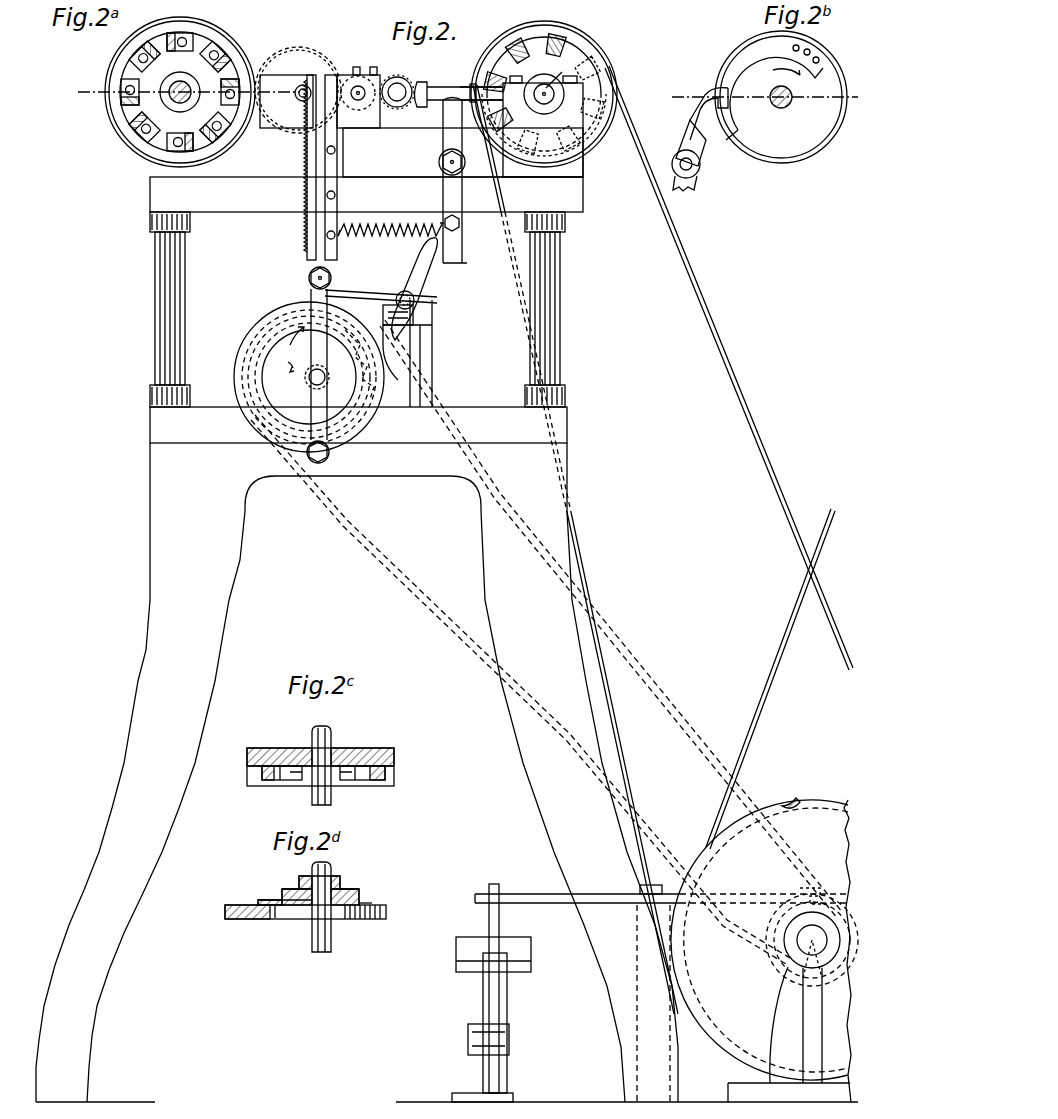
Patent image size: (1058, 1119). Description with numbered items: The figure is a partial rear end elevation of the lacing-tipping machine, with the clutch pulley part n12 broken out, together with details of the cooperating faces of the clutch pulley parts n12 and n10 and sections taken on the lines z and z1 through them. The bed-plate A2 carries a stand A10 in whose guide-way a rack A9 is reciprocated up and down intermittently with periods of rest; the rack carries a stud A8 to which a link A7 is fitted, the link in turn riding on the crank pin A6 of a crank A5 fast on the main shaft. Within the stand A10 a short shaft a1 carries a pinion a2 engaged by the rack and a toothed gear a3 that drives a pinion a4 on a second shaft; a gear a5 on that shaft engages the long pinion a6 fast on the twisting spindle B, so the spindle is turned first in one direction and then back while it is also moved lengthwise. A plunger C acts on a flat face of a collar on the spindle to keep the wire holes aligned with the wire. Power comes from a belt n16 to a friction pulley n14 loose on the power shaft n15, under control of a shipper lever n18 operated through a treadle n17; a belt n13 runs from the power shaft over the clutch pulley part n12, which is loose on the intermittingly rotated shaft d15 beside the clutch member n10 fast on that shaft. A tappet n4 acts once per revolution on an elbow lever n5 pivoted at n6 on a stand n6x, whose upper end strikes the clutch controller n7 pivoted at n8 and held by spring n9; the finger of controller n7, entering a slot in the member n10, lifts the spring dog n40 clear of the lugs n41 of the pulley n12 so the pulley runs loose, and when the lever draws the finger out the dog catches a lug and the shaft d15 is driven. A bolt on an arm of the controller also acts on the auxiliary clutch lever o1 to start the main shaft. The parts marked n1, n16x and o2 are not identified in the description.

In FIG. 2, the short shaft a1 is at (300, 100).
In FIG. 2, the pinion a2 is at (306, 88).
In FIG. 2, the toothed gear a3 is at (296, 50).
In FIG. 2, the pinion a4 is at (358, 112).
In FIG. 2, the toothed gear a5 is at (362, 78).
In FIG. 2, the long pinion a6 is at (398, 77).
In FIG. 2, the twisting spindle B is at (423, 82).
In FIG. 2, the plunger C is at (450, 87).
In FIG. 2, the bed-plate A2 is at (150, 197).
In FIG. 2, the crank A5 is at (360, 444).
In FIG. 2, the crank pin A6 is at (306, 455).
In FIG. 2, the link A7 is at (312, 330).
In FIG. 2, the stud A8 is at (308, 280).
In FIG. 2, the rack A9 is at (325, 252).
In FIG. 2, the stand A10 is at (307, 160).
In FIG. 2, the belt n1 is at (673, 853).
In FIG. 2, the tappet n4 is at (385, 292).
In FIG. 2, the elbow lever n5 is at (372, 292).
In FIG. 2, the pivot n6 is at (400, 318).
In FIG. 2, the stand n6x is at (432, 378).
In FIG. 2B, the clutch controller n7 is at (684, 140).
In FIG. 2, the clutch controller n7 is at (465, 187).
In FIG. 2D, the clutch controller n7 is at (245, 917).
In FIG. 2, the pivot n8 is at (438, 163).
In FIG. 2, the spring n9 is at (391, 241).
In FIG. 2B, the clutch member n10 is at (742, 52).
In FIG. 2, the clutch member n10 is at (494, 62).
In FIG. 2D, the clutch member n10 is at (372, 903).
In FIG. 2A, the clutch pulley part n12 is at (108, 70).
In FIG. 2, the clutch pulley part n12 is at (588, 150).
In FIG. 2C, the clutch pulley part n12 is at (398, 752).
In FIG. 2, the belt n13 is at (710, 360).
In FIG. 2, the pulley n14 is at (815, 796).
In FIG. 2, the power shaft n15 is at (800, 945).
In FIG. 2, the belt n16 is at (752, 735).
In FIG. 2, the pin n16x is at (786, 802).
In FIG. 2, the treadle n17 is at (456, 949).
In FIG. 2, the shipper lever n18 is at (540, 904).
In FIG. 2B, the spring dog n40 is at (718, 92).
In FIG. 2, the spring dog n40 is at (530, 40).
In FIG. 2D, the spring dog n40 is at (292, 914).
In FIG. 2A, the lugs or teeth n41 is at (162, 97).
In FIG. 2, the lugs or teeth n41 is at (562, 72).
In FIG. 2C, the lugs or teeth n41 is at (378, 790).
In FIG. 2A, the shaft d15 is at (172, 99).
In FIG. 2B, the shaft d15 is at (785, 108).
In FIG. 2, the shaft d15 is at (555, 91).
In FIG. 2C, the shaft d15 is at (331, 740).
In FIG. 2D, the shaft d15 is at (312, 940).
In FIG. 2, the auxiliary clutch lever o1 is at (400, 345).
In FIG. 2, the roller o2 is at (414, 300).
In FIG. 2A, the section line z is at (181, 91).
In FIG. 2B, the section line z1 is at (758, 94).